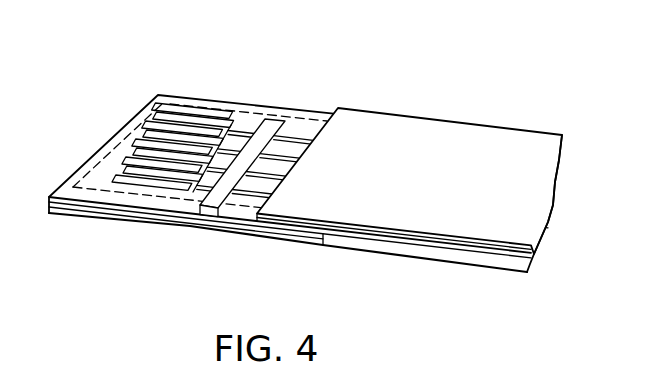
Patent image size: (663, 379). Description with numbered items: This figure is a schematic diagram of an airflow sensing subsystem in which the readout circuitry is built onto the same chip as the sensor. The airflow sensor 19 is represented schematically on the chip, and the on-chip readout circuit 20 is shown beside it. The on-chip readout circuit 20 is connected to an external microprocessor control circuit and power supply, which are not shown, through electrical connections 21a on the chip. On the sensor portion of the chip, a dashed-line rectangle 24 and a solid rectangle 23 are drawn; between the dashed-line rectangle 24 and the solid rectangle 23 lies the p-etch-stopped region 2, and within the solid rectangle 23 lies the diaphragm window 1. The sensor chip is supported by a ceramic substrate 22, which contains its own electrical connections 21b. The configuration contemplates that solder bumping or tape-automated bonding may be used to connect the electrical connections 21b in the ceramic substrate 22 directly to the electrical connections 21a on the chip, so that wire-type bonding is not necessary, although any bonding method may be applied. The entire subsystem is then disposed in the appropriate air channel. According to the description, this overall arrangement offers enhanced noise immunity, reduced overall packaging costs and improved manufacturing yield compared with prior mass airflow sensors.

The diaphragm window 1 is at (172, 99).
The p-etch-stopped region 2 is at (290, 183).
The airflow sensor 19 is at (186, 223).
The on-chip readout circuit 20 is at (200, 214).
The electrical connections 21a is at (290, 124).
The electrical connections 21b is at (372, 175).
The ceramic substrate 22 is at (409, 181).
The solid rectangle 23 is at (130, 143).
The dashed-line rectangle 24 is at (136, 128).